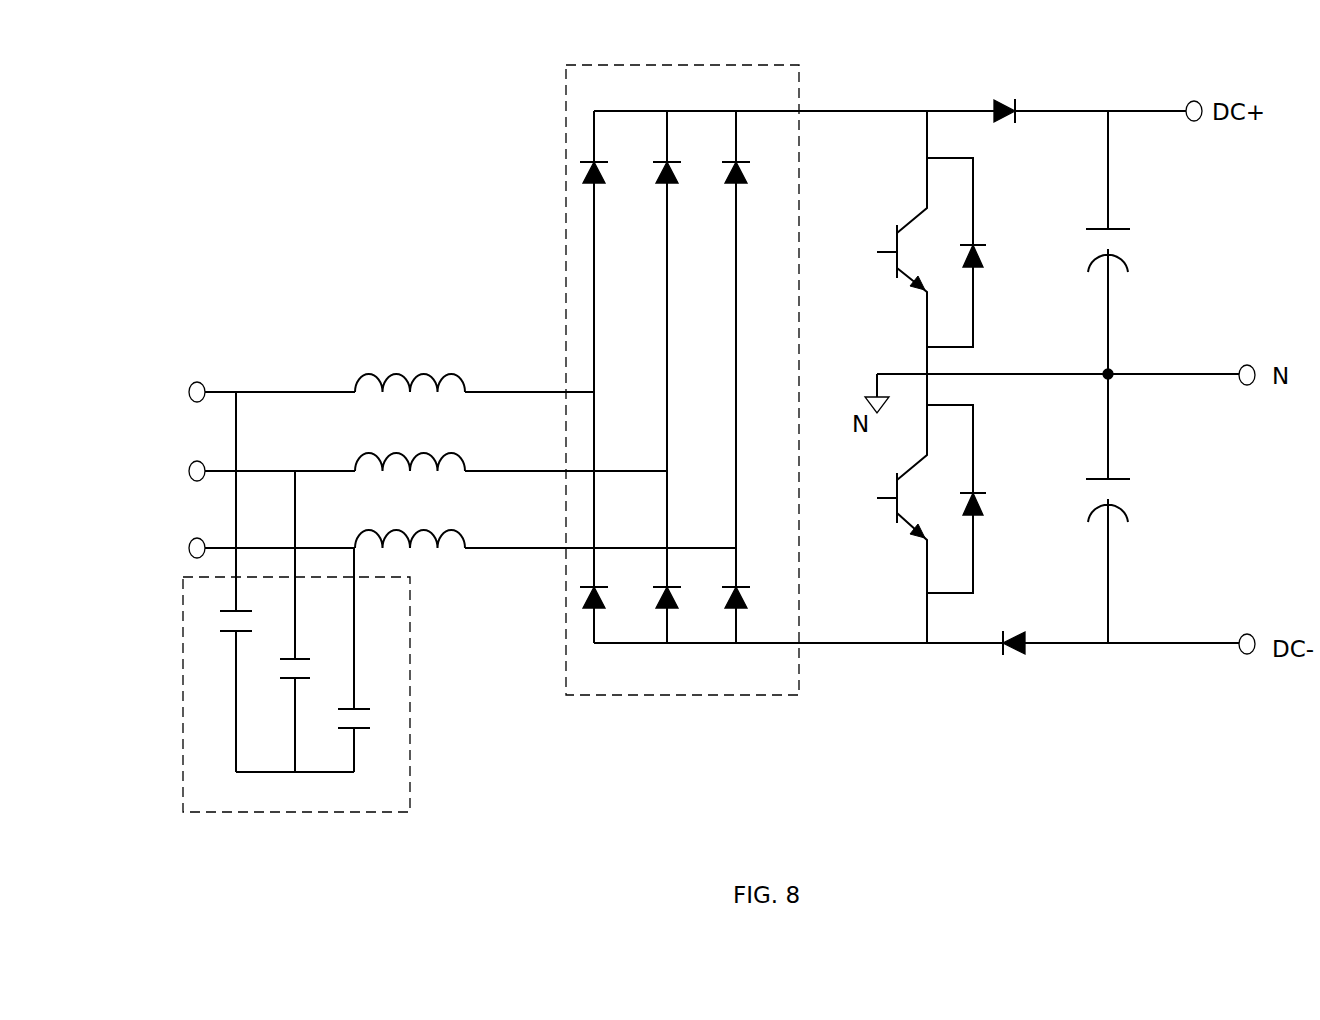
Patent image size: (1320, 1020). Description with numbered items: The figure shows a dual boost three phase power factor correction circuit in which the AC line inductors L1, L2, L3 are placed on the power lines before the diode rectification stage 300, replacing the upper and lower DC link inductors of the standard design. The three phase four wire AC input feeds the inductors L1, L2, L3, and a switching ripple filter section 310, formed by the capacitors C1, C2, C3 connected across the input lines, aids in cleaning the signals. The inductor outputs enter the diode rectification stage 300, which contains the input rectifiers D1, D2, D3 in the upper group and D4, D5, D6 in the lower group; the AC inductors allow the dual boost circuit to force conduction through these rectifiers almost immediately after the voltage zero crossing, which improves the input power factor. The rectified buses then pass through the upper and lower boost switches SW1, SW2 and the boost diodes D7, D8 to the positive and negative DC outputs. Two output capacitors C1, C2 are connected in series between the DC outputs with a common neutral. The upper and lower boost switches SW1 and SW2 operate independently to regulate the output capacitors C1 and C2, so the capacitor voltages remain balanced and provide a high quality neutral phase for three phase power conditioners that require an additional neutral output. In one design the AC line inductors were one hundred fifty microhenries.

The AC line inductor L1 is at (410, 367).
The AC line inductor L2 is at (410, 445).
The AC line inductor L3 is at (410, 523).
The output capacitor C1 is at (679, 441).
The output capacitor C2 is at (708, 573).
The switching ripple filter capacitor C3 is at (366, 660).
The input rectifier diode D1 is at (612, 187).
The input rectifier diode D2 is at (684, 187).
The input rectifier diode D3 is at (754, 187).
The input rectifier diode D4 is at (612, 612).
The input rectifier diode D5 is at (684, 612).
The input rectifier diode D6 is at (754, 612).
The boost diode D7 is at (1008, 93).
The boost diode D8 is at (1011, 625).
The upper boost switch SW1 is at (963, 242).
The lower boost switch SW2 is at (963, 508).
The diode rectification stage 300 is at (670, 695).
The switching ripple filter section 310 is at (305, 812).